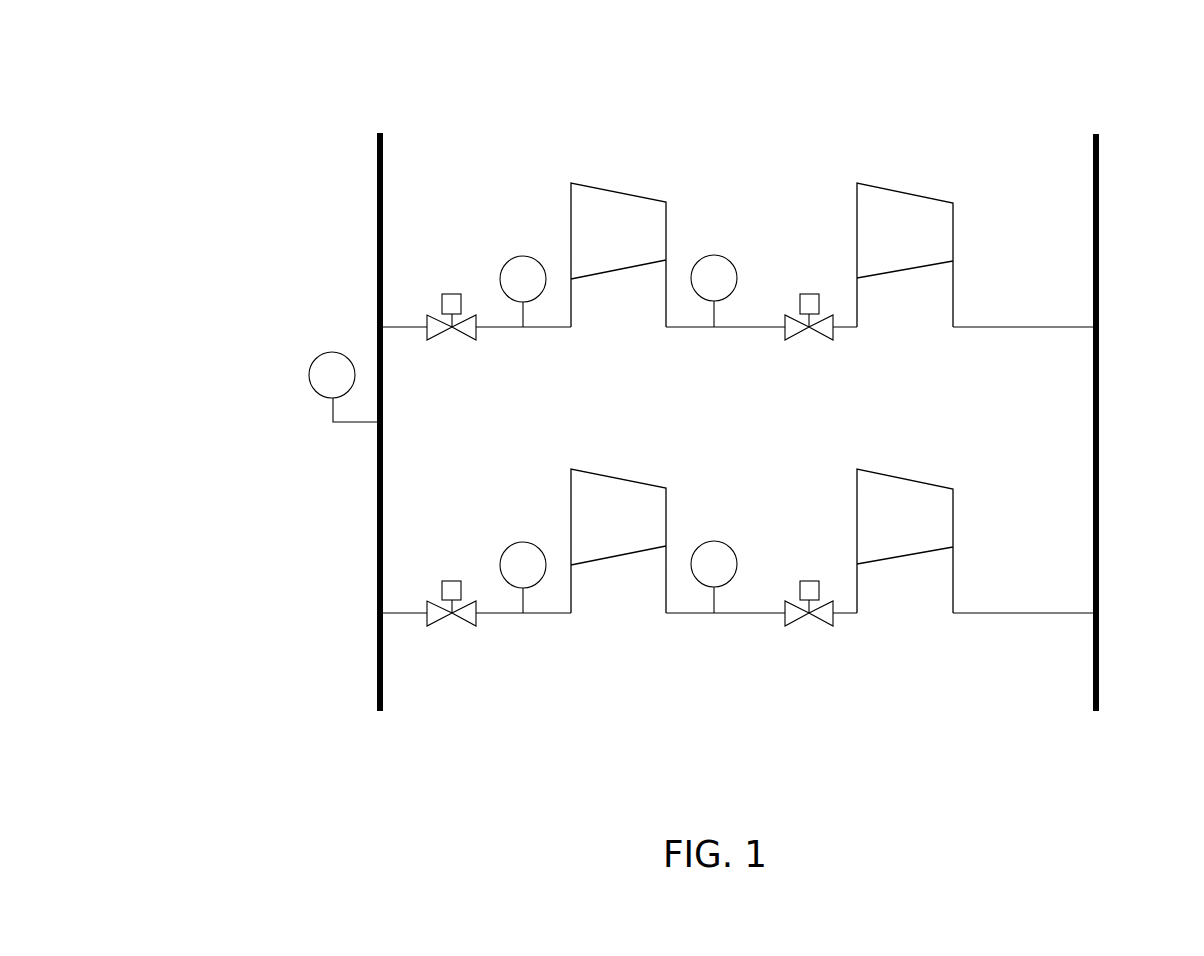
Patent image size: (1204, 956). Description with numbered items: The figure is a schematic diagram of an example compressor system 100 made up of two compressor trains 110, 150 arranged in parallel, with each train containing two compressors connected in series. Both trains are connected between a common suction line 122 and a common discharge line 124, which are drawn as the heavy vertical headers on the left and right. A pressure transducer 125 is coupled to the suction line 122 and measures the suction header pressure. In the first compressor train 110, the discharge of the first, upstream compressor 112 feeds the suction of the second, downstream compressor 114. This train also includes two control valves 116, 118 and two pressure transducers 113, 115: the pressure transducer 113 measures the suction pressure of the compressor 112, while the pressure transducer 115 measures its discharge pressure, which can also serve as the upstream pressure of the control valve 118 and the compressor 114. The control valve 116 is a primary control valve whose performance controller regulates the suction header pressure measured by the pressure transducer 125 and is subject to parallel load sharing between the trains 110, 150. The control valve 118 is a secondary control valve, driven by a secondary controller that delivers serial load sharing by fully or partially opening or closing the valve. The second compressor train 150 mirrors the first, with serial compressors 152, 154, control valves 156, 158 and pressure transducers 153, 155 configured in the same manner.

The compressor system 100 is at (199, 55).
The first compressor train 110 is at (1072, 198).
The first compressor 112 is at (592, 190).
The pressure transducer 113 is at (523, 254).
The second compressor 114 is at (898, 190).
The pressure transducer 115 is at (714, 254).
The control valve 116 is at (448, 292).
The control valve 118 is at (805, 292).
The suction line 122 is at (377, 236).
The discharge line 124 is at (1099, 392).
The pressure transducer 125 is at (323, 355).
The second compressor train 150 is at (1072, 500).
The compressor 152 is at (592, 477).
The pressure transducer 153 is at (523, 541).
The compressor 154 is at (898, 477).
The pressure transducer 155 is at (718, 541).
The control valve 156 is at (448, 580).
The control valve 158 is at (806, 580).